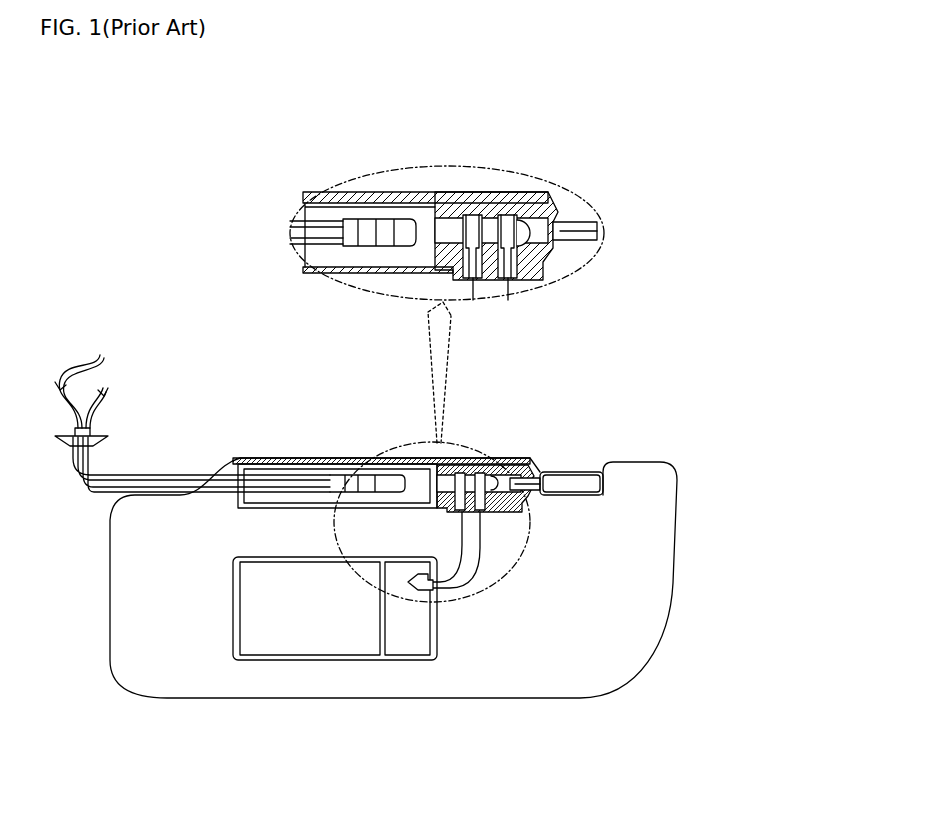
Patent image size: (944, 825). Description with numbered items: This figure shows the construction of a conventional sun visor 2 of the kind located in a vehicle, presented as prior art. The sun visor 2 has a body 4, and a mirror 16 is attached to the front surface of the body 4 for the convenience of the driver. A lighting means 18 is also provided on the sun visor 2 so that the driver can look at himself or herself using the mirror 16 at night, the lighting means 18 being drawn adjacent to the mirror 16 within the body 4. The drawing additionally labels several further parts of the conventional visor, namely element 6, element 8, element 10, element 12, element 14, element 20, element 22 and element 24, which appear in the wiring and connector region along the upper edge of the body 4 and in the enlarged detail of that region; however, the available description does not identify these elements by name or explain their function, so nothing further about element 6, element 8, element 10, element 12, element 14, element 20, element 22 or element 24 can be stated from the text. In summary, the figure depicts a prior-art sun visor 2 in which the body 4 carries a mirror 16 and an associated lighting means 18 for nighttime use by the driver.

The sun visor 2 is at (288, 400).
The body 4 is at (533, 698).
The wire harness 6 is at (155, 474).
The connector housing 8 is at (368, 197).
The plug connector 10 is at (313, 203).
The housing 12 is at (252, 464).
The pivot pin / hinge mount 14 is at (558, 198).
The mirror 16 is at (287, 645).
The lighting means 18 is at (410, 585).
The lead wires 20 is at (85, 378).
The terminals 22 is at (348, 238).
The enlarged connector portion 24 is at (468, 170).